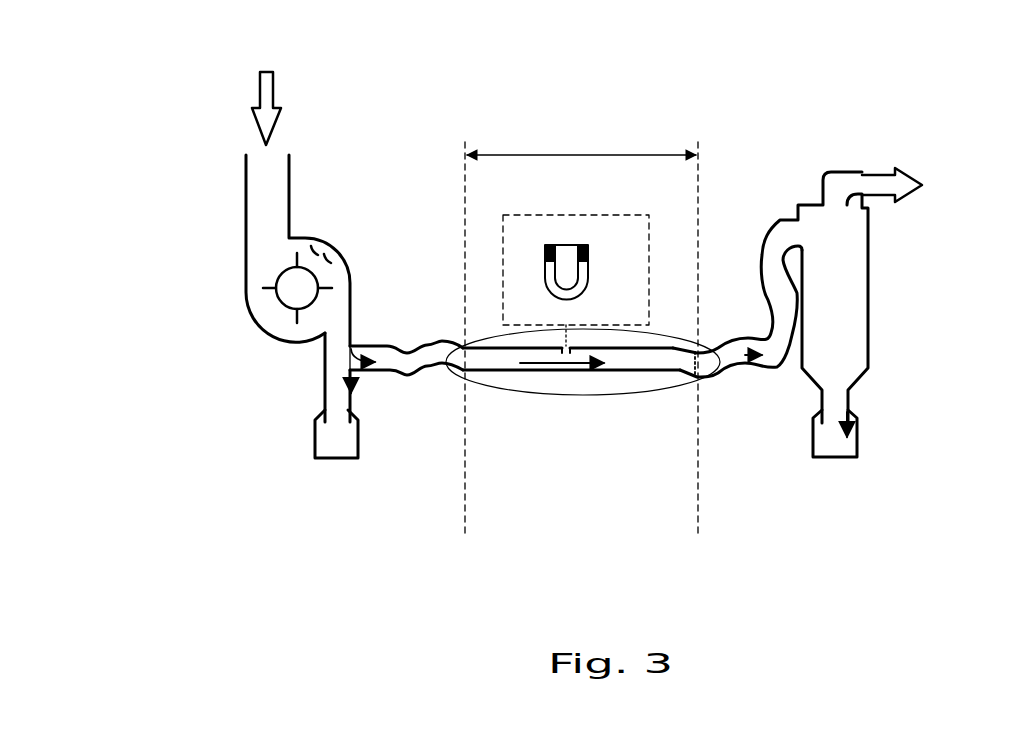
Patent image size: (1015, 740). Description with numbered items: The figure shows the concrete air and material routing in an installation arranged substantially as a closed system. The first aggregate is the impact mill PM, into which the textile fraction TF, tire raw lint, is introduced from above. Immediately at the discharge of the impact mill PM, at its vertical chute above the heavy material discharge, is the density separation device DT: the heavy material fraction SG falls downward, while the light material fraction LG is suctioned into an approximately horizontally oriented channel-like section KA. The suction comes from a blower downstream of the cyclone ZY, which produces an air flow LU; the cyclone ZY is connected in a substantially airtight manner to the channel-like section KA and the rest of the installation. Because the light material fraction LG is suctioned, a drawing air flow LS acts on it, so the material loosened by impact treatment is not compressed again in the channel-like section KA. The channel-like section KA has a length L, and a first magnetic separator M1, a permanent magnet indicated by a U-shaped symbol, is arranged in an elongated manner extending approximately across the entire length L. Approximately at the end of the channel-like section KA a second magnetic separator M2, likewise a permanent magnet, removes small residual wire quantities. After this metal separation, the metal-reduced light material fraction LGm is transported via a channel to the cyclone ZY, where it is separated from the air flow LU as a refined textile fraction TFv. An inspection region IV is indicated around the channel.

The textile fraction TF is at (273, 88).
The impact mill PM is at (260, 238).
The density separation device DT is at (381, 327).
The heavy material fraction SG is at (350, 370).
The light material fraction LG is at (373, 370).
The channel-like section KA is at (513, 370).
The drawing air flow LS is at (572, 366).
The inspection volume IV is at (675, 387).
The length of channel-like section L is at (581, 326).
The first magnetic separator M1 is at (652, 347).
The second magnetic separator M2 is at (700, 345).
The metal-reduced light material fraction LGm is at (750, 357).
The air flow LU is at (925, 187).
The cyclone ZY is at (883, 278).
The refined textile fraction TFv is at (852, 418).